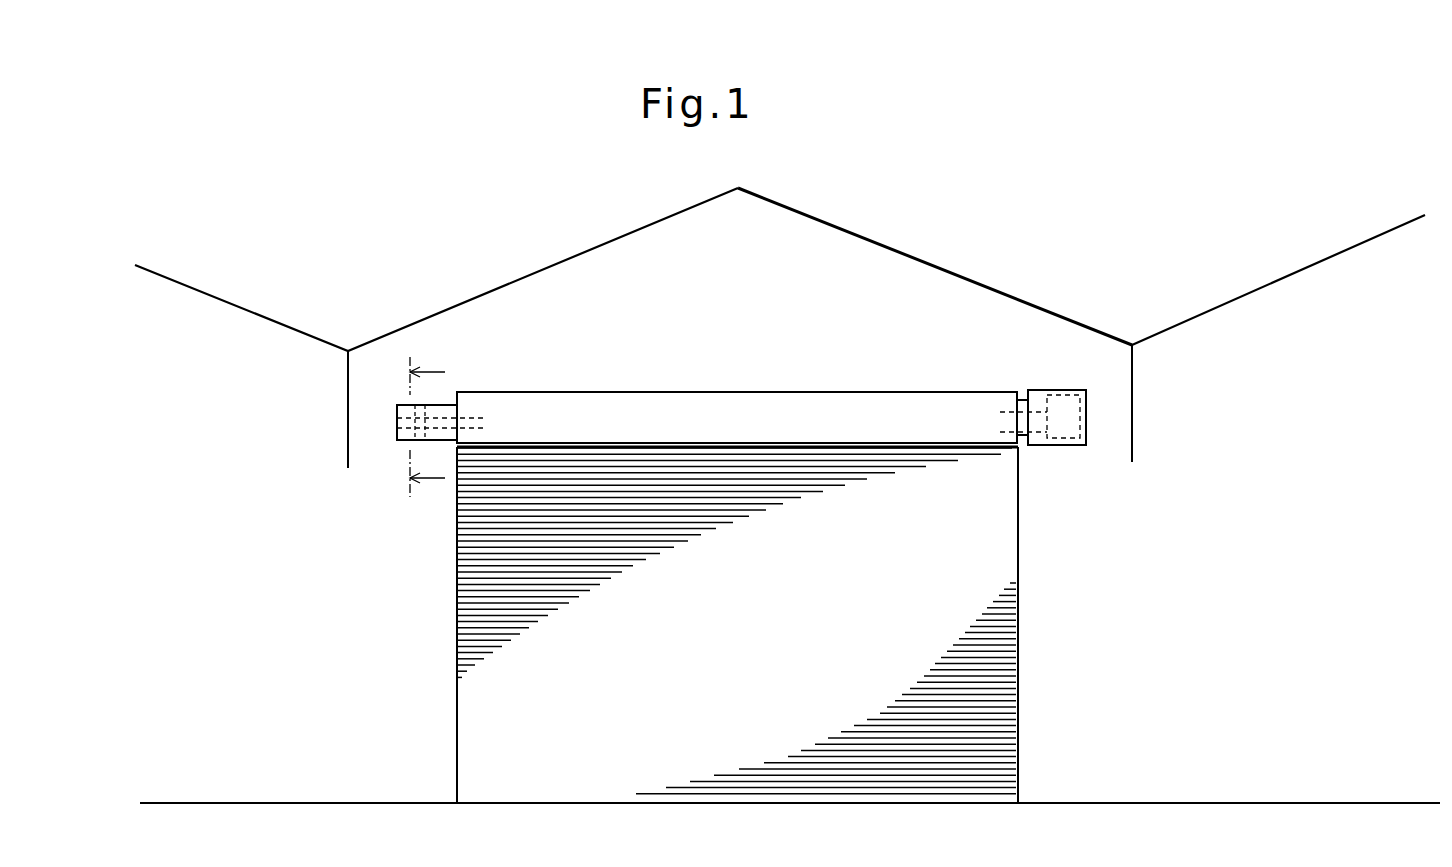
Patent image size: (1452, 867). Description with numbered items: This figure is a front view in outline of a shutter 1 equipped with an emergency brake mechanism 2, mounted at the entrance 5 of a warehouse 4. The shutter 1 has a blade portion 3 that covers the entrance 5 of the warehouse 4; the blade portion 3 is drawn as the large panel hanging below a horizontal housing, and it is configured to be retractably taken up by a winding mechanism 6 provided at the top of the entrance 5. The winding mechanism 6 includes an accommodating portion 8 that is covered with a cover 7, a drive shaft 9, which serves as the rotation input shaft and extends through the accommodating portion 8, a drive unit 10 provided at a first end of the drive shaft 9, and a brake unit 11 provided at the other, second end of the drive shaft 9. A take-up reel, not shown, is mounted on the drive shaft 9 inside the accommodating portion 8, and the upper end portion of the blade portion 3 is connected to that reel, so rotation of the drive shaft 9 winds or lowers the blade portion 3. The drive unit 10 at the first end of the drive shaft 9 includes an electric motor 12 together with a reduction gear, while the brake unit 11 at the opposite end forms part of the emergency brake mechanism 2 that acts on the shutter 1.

The shutter 1 is at (759, 492).
The emergency brake mechanism 2 is at (390, 380).
The blade portion 3 is at (998, 685).
The warehouse 4 is at (1012, 298).
The entrance 5 is at (1018, 520).
The winding mechanism 6 is at (1037, 378).
The cover 7 is at (687, 390).
The accommodating portion 8 is at (580, 415).
The drive shaft 9 is at (488, 428).
The drive unit 10 is at (1087, 401).
The brake unit 11 is at (397, 425).
The electric motor 12 is at (1086, 431).